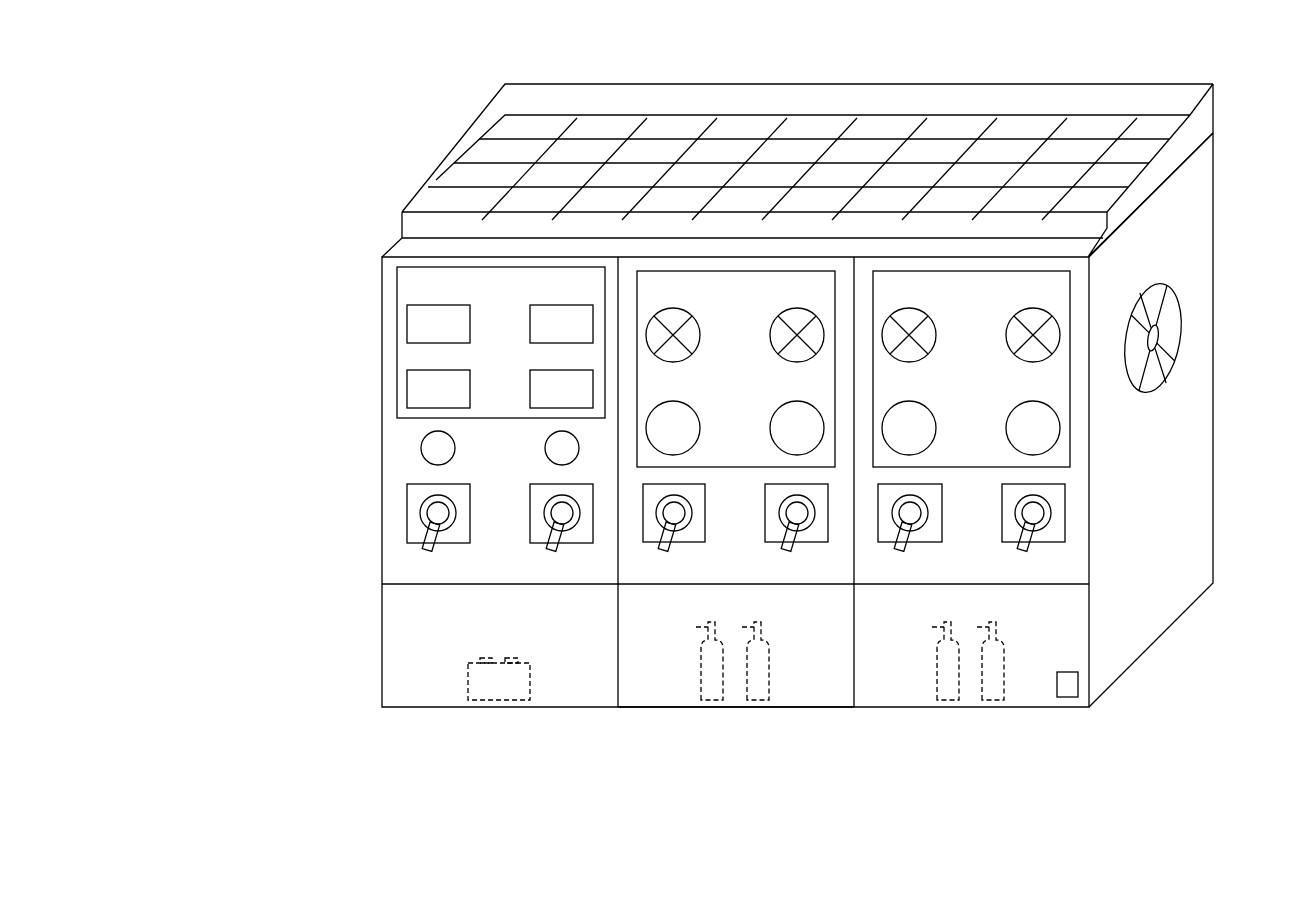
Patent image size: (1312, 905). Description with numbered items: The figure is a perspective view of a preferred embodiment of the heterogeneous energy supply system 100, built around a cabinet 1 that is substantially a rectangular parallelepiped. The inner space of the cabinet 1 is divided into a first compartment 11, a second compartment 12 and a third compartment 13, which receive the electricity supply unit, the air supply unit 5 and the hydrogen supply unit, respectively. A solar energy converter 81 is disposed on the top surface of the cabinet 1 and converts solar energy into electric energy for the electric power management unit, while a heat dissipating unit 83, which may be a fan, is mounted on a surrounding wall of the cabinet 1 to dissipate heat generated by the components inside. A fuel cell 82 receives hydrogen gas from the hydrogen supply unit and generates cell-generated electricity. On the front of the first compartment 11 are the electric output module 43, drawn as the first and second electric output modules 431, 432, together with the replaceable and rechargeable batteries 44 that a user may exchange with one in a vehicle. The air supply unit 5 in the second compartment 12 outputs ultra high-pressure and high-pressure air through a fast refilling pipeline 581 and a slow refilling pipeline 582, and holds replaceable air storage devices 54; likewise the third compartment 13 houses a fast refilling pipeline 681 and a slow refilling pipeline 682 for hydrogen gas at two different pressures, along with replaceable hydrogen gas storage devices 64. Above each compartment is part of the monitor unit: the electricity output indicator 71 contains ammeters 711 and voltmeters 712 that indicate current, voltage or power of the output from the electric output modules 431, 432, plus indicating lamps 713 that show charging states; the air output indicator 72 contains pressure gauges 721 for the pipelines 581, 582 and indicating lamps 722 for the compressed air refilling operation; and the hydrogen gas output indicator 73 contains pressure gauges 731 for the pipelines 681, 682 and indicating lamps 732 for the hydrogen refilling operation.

The heterogeneous energy supply system 100 is at (363, 118).
The cabinet 1 is at (1195, 252).
The first compartment 11 is at (423, 717).
The second compartment 12 is at (663, 717).
The third compartment 13 is at (897, 717).
The air supply unit 5 is at (795, 717).
The switch unit 43 is at (532, 616).
The first electric output module 431 is at (432, 548).
The second electric output module 432 is at (552, 550).
The replaceable and rechargeable batteries 44 is at (507, 713).
The replaceable air storage devices 54 is at (713, 688).
The fast refilling pipeline 581 is at (668, 548).
The slow refilling pipeline 582 is at (785, 550).
The replaceable hydrogen gas storage devices 64 is at (949, 688).
The fast refilling pipeline 681 is at (904, 548).
The slow refilling pipeline 682 is at (1022, 550).
The electricity output indicator 71 is at (417, 285).
The ammeters 711 is at (543, 326).
The voltmeters 712 is at (540, 396).
The indicating lamps 713 is at (553, 445).
The air output indicator 72 is at (742, 447).
The pressure gauges 721 is at (780, 337).
The indicating lamps 722 is at (780, 428).
The hydrogen gas output indicator 73 is at (977, 443).
The pressure gauges 731 is at (1016, 337).
The indicating lamps 732 is at (1016, 428).
The solar energy converter 81 is at (713, 158).
The fuel cell 82 is at (1066, 687).
The heat dissipating unit 83 is at (1152, 343).